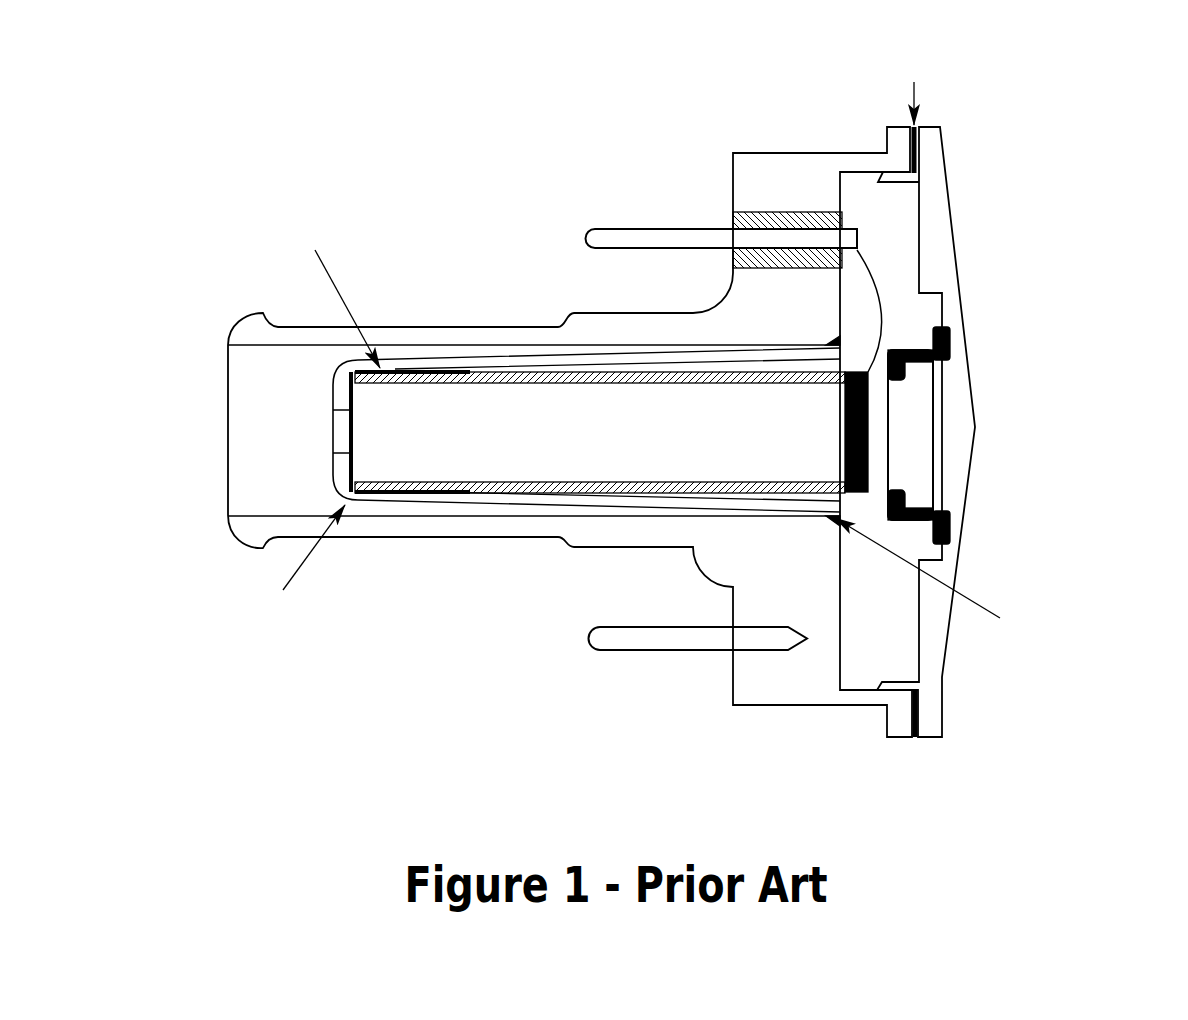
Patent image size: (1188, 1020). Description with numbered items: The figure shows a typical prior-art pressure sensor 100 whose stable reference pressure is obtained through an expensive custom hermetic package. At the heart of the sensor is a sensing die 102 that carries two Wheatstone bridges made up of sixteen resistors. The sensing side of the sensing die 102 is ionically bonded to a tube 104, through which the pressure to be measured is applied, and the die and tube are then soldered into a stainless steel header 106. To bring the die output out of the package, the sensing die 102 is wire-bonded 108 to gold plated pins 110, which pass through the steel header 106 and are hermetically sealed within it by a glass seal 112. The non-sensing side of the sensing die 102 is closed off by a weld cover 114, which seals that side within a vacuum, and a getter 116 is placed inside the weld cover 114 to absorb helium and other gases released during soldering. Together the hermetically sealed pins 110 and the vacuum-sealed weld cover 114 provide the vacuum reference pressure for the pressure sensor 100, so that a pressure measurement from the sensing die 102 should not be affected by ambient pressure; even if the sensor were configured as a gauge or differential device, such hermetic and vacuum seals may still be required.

The pressure sensor 100 is at (302, 110).
The sensing die 102 is at (868, 445).
The tube 104 is at (593, 492).
The stainless steel header 106 is at (767, 683).
The wire bond 108 is at (885, 283).
The gold plated pins 110 is at (578, 232).
The glass seal 112 is at (727, 215).
The weld cover 114 is at (958, 205).
The getter 116 is at (920, 420).